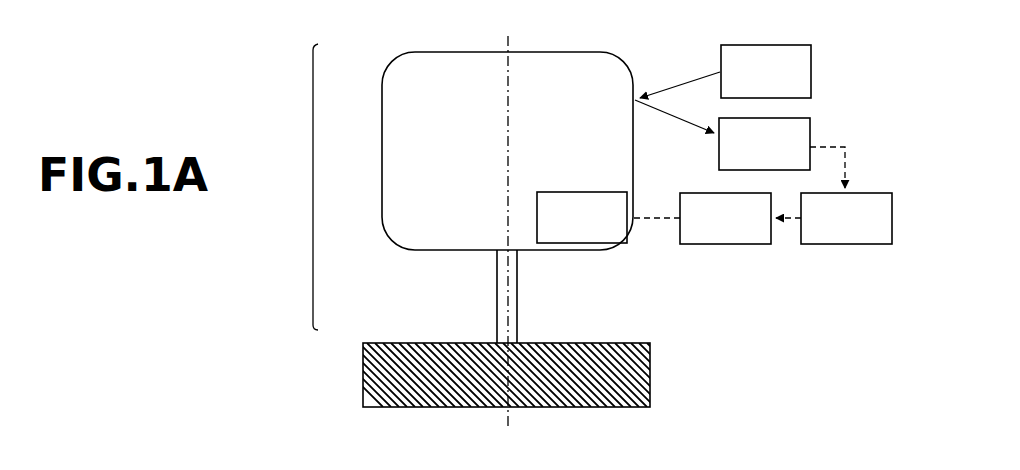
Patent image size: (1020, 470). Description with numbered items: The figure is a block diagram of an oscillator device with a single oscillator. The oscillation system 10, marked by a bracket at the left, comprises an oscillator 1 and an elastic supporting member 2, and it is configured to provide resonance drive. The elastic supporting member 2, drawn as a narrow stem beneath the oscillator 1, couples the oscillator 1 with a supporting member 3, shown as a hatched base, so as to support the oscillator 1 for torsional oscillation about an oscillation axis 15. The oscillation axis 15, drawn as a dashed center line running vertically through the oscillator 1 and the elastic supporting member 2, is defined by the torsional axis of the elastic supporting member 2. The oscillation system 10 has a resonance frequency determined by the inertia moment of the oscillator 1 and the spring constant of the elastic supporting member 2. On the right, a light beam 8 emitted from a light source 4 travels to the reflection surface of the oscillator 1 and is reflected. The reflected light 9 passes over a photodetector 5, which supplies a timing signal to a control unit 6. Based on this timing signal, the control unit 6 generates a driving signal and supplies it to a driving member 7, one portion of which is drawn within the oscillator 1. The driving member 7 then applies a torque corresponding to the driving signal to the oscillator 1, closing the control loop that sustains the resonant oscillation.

The oscillator 1 is at (507, 151).
The elastic supporting member 2 is at (496, 296).
The supporting member 3 is at (652, 372).
The light source 4 is at (766, 71).
The photodetector 5 is at (782, 153).
The control unit 6 is at (834, 218).
The driving member 7 is at (654, 218).
The light beam 8 is at (680, 75).
The reflected light 9 is at (674, 129).
The oscillation system 10 is at (313, 104).
The oscillation axis 15 is at (505, 217).